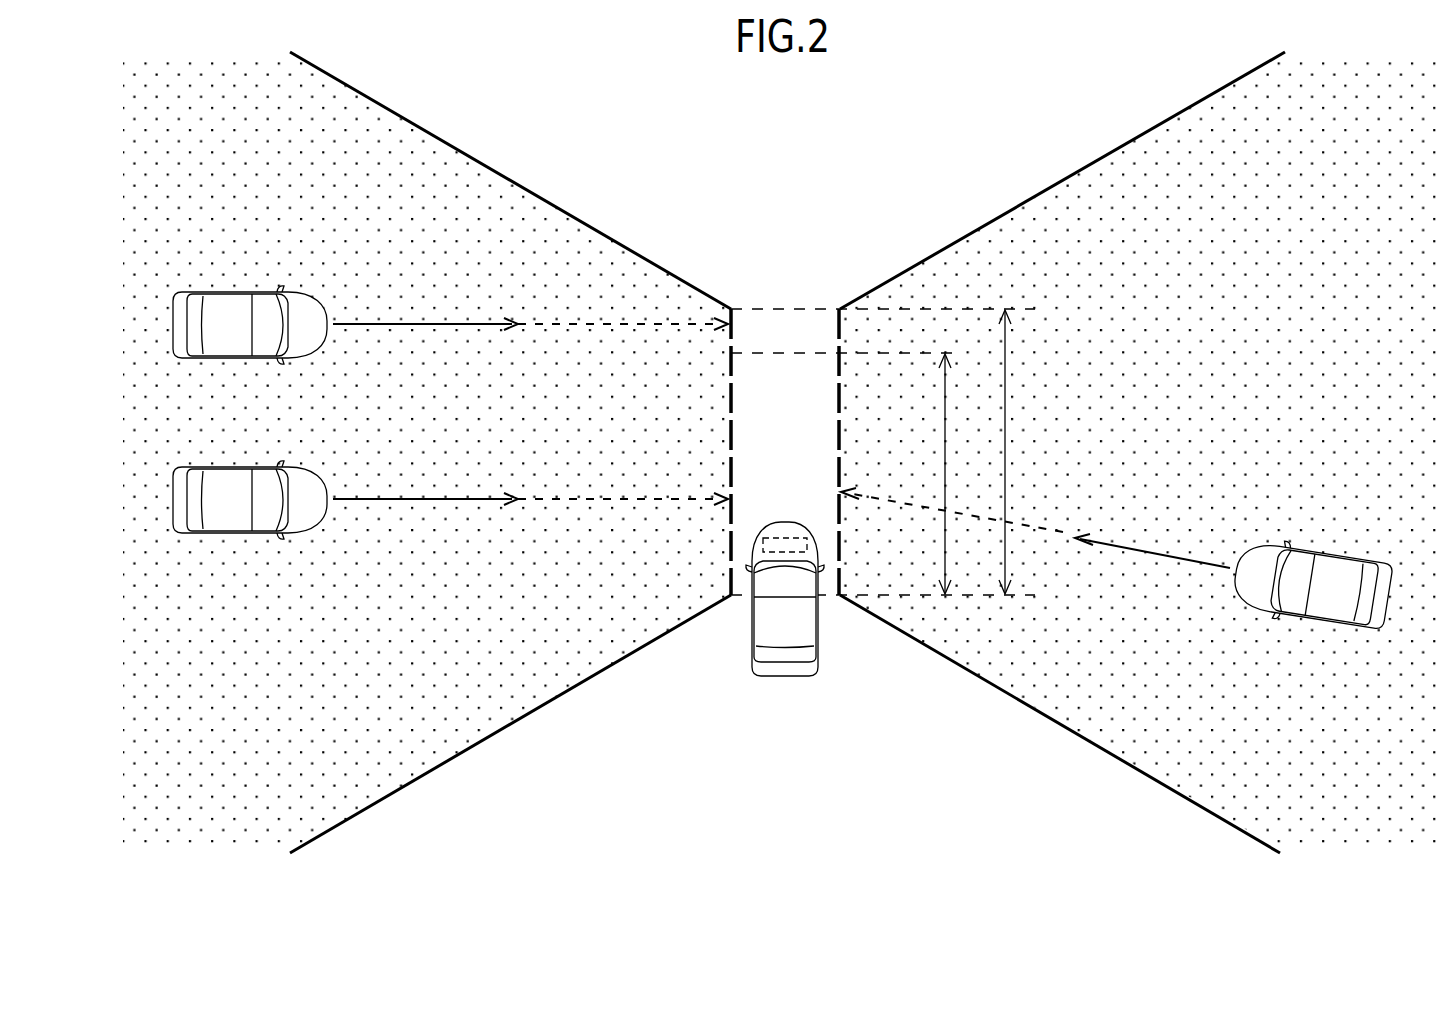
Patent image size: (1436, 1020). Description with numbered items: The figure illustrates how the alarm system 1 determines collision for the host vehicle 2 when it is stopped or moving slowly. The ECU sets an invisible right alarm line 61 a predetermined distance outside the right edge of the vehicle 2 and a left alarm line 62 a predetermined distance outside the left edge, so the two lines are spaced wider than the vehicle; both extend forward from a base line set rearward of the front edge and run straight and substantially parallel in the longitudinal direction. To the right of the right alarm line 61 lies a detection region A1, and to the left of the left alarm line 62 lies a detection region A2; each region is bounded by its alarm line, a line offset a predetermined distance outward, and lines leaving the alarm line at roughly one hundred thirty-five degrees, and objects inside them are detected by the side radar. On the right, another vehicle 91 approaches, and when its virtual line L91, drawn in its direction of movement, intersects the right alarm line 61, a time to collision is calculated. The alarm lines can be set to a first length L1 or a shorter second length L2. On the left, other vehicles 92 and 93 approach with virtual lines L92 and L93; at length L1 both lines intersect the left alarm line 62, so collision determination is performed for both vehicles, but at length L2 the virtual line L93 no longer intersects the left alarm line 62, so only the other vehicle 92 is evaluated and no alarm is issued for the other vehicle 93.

The alarm system 1 is at (752, 542).
The vehicle 2 is at (785, 680).
The right alarm line 61 is at (837, 444).
The left alarm line 62 is at (733, 420).
The other vehicle 91 is at (1325, 553).
The other vehicle 92 is at (228, 467).
The other vehicle 93 is at (228, 292).
The virtual line L91 is at (1062, 530).
The virtual line L92 is at (568, 497).
The virtual line L93 is at (568, 322).
The first length L1 is at (1017, 452).
The second length L2 is at (958, 474).
The detection region A1 is at (1067, 728).
The detection region A2 is at (500, 730).